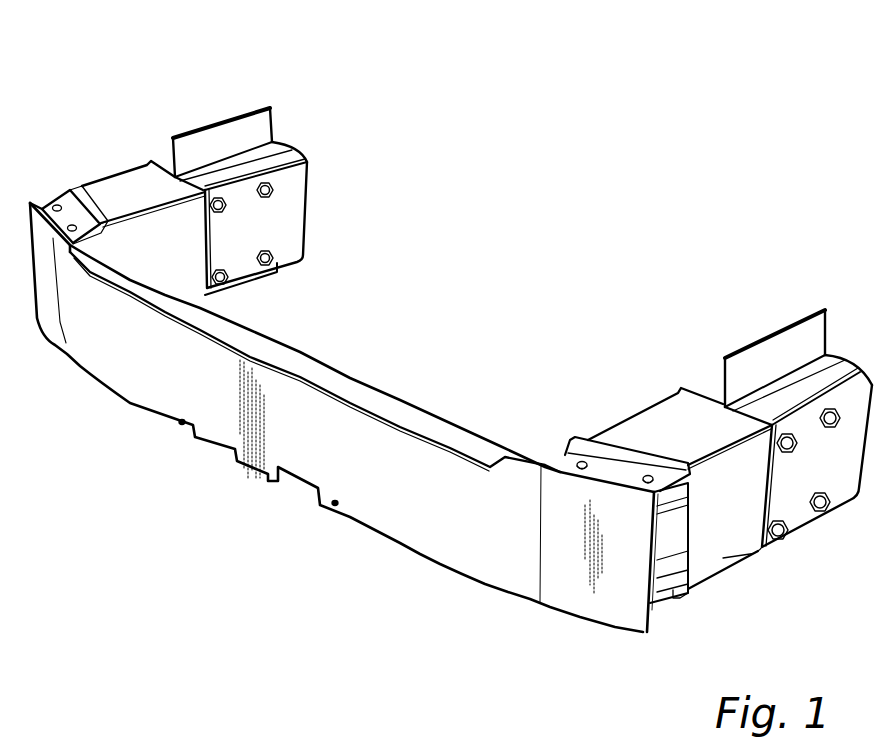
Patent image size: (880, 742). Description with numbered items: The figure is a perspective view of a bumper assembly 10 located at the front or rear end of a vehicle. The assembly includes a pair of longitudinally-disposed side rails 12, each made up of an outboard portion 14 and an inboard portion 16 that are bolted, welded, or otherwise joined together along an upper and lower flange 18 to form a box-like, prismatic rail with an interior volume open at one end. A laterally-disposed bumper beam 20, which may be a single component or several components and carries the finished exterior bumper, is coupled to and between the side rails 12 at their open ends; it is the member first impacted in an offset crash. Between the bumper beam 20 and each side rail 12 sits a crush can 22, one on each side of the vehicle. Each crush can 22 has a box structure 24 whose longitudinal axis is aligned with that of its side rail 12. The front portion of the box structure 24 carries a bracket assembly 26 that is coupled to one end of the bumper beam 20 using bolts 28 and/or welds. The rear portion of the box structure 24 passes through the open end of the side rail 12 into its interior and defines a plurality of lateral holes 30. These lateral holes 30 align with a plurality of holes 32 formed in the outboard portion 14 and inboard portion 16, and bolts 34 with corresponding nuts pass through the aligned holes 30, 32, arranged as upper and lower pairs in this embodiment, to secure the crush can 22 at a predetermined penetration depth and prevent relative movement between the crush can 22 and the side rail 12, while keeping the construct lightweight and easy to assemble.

The bumper assembly 10 is at (450, 268).
The side rail 12 is at (283, 146).
The outboard portion 14 is at (846, 342).
The inboard portion 16 is at (327, 180).
The upper and lower flange 18 is at (763, 300).
The bumper beam 20 is at (416, 610).
The crush can 22 is at (153, 150).
The box structure 24 is at (115, 160).
The bracket assembly 26 is at (69, 125).
The bolts 28 is at (52, 170).
The lateral holes 30 is at (785, 541).
The holes 32 is at (785, 541).
The bolts 34 is at (794, 553).